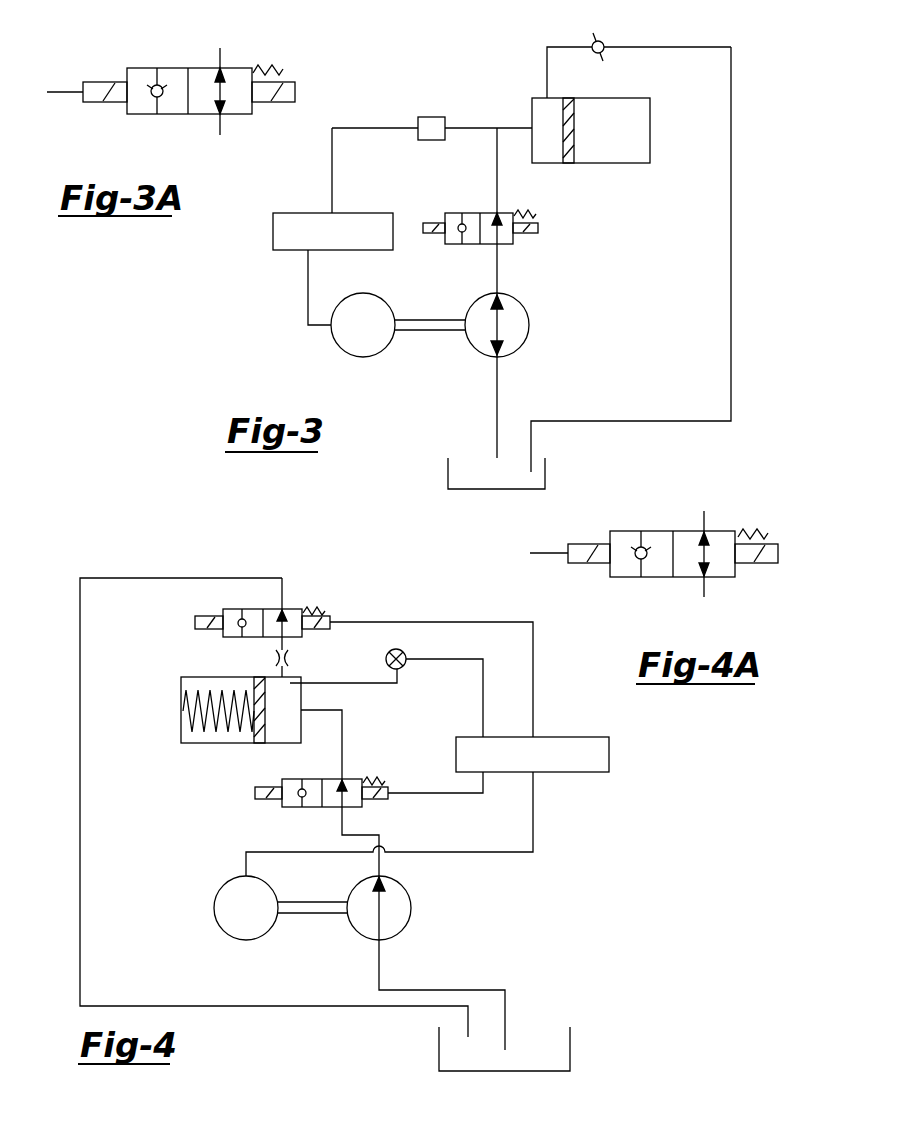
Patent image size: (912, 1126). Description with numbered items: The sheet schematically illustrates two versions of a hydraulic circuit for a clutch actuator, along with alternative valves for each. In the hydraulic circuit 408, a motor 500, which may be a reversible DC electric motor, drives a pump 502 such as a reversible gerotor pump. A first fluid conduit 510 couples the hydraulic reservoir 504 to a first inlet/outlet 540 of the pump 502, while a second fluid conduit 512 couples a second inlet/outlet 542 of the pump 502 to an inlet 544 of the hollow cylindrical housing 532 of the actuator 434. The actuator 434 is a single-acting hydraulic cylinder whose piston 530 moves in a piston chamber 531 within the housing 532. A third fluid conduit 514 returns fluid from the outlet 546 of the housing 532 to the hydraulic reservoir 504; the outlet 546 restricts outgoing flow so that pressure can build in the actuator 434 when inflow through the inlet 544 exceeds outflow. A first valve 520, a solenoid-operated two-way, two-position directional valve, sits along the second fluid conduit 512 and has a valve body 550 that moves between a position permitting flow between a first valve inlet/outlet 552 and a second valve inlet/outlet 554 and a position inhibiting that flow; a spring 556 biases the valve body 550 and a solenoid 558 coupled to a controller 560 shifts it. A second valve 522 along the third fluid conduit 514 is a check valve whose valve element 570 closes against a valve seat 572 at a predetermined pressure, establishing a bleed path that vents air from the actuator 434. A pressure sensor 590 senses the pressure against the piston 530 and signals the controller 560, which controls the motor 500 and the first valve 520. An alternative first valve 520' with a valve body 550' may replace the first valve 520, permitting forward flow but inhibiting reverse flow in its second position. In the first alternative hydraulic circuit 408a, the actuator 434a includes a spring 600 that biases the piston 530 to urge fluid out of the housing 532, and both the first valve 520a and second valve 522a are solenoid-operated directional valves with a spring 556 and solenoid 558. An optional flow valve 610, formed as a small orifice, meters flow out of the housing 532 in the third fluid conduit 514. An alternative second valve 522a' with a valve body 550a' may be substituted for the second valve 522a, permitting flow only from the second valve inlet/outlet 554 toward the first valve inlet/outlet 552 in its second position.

In FIG. 3, the hydraulic circuit 408 is at (742, 72).
In FIG. 4, the first alternative hydraulic circuit 408a is at (572, 842).
In FIG. 3, the actuator 434 is at (598, 113).
In FIG. 4, the actuator 434a is at (235, 712).
In FIG. 3, the motor 500 is at (341, 353).
In FIG. 4, the motor 500 is at (220, 928).
In FIG. 3, the pump 502 is at (523, 332).
In FIG. 4, the pump 502 is at (412, 910).
In FIG. 3, the hydraulic reservoir 504 is at (448, 473).
In FIG. 4, the hydraulic reservoir 504 is at (439, 1042).
In FIG. 3, the first fluid conduit 510 is at (499, 408).
In FIG. 4, the first fluid conduit 510 is at (382, 963).
In FIG. 3, the second fluid conduit 512 is at (497, 172).
In FIG. 4, the second fluid conduit 512 is at (343, 727).
In FIG. 3, the third fluid conduit 514 is at (731, 175).
In FIG. 4, the third fluid conduit 514 is at (80, 822).
In FIG. 3, the first valve 520 is at (492, 223).
In FIG. 3A, the alternative first valve 520' is at (202, 93).
In FIG. 4, the first valve 520a is at (325, 786).
In FIG. 3, the second valve 522 is at (632, 49).
In FIG. 4, the second valve 522a is at (305, 612).
In FIG. 4A, the alternative second valve 522a' is at (654, 546).
In FIG. 3, the piston 530 is at (575, 142).
In FIG. 4, the piston 530 is at (253, 731).
In FIG. 3, the piston chamber 531 is at (626, 122).
In FIG. 4, the piston chamber 531 is at (302, 683).
In FIG. 3, the hollow cylindrical housing 532 is at (651, 143).
In FIG. 4, the hollow cylindrical housing 532 is at (180, 685).
In FIG. 3, the first inlet/outlet 540 is at (492, 362).
In FIG. 3, the second inlet/outlet 542 is at (492, 293).
In FIG. 3, the inlet 544 is at (531, 128).
In FIG. 3, the outlet 546 is at (539, 97).
In FIG. 3, the valve body 550 is at (433, 247).
In FIG. 3A, the valve body 550' is at (170, 113).
In FIG. 4A, the valve body 550a' is at (658, 576).
In FIG. 3A, the first valve inlet/outlet 552 is at (221, 115).
In FIG. 3, the first valve inlet/outlet 552 is at (498, 247).
In FIG. 4A, the first valve inlet/outlet 552 is at (705, 577).
In FIG. 3A, the second valve inlet/outlet 554 is at (219, 67).
In FIG. 3, the second valve inlet/outlet 554 is at (496, 212).
In FIG. 4A, the second valve inlet/outlet 554 is at (703, 531).
In FIG. 3A, the spring 556 is at (282, 73).
In FIG. 3, the spring 556 is at (532, 212).
In FIG. 4A, the spring 556 is at (753, 530).
In FIG. 3A, the solenoid 558 is at (98, 82).
In FIG. 3, the solenoid 558 is at (539, 230).
In FIG. 4A, the solenoid 558 is at (583, 544).
In FIG. 3, the controller 560 is at (313, 213).
In FIG. 4, the controller 560 is at (578, 737).
In FIG. 3, the valve element 570 is at (594, 42).
In FIG. 3, the valve seat 572 is at (615, 30).
In FIG. 3, the pressure sensor 590 is at (432, 117).
In FIG. 4, the pressure sensor 590 is at (403, 652).
In FIG. 4, the spring 600 is at (197, 688).
In FIG. 4, the flow valve 610 is at (276, 658).